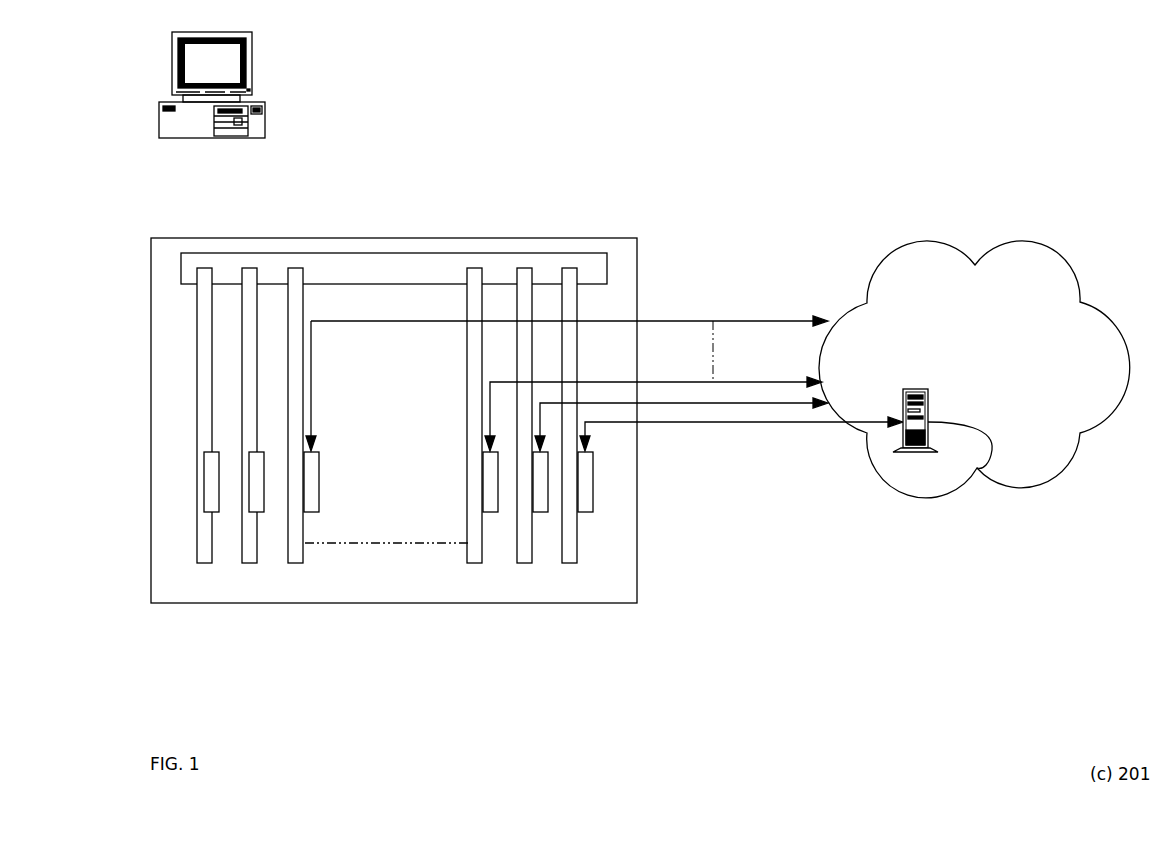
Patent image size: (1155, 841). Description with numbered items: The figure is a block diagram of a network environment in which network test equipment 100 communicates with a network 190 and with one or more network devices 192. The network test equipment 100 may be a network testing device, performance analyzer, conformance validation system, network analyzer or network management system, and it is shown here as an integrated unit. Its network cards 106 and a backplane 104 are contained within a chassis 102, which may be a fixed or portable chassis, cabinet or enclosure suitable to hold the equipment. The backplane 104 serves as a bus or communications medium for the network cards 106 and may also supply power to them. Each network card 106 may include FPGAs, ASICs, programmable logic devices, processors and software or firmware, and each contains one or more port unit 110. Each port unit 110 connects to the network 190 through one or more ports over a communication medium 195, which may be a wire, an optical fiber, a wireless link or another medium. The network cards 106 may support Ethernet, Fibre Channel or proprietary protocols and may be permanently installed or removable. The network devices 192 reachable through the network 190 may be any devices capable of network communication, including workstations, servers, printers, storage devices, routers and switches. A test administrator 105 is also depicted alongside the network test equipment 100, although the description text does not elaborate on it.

The network test equipment 100 is at (584, 46).
The chassis 102 is at (502, 237).
The backplane 104 is at (562, 253).
The test administrator 105 is at (395, 223).
The network cards 106 is at (182, 565).
The port unit 110 is at (580, 513).
The network 190 is at (974, 369).
The network devices 192 is at (977, 468).
The communication medium 195 is at (698, 422).